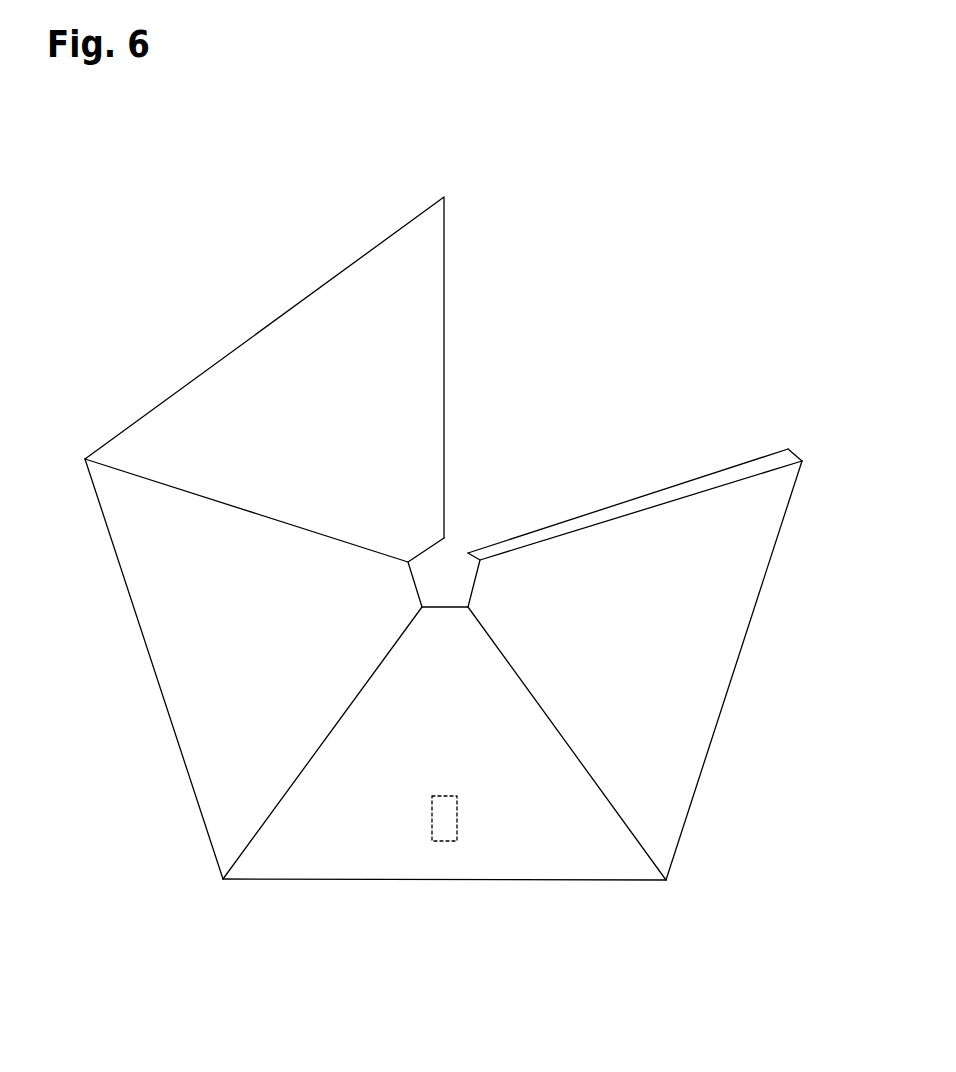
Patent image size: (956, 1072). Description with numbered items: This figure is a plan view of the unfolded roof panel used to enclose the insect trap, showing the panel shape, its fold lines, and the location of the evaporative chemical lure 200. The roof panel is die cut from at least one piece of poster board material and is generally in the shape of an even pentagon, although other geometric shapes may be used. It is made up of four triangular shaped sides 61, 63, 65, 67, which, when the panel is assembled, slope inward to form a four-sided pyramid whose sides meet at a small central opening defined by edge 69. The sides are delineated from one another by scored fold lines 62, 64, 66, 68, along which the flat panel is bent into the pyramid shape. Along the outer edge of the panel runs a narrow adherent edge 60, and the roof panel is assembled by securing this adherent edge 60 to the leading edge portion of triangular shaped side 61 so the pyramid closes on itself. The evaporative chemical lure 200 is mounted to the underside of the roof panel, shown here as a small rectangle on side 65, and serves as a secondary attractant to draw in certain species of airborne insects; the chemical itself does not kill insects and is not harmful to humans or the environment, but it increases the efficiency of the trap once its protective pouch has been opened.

The adherent edge 60 is at (637, 508).
The triangular shaped side 61 is at (320, 355).
The scored fold line 62 is at (175, 483).
The triangular shaped side 63 is at (202, 597).
The scored fold line 64 is at (258, 832).
The triangular shaped side 65 is at (523, 833).
The scored fold line 66 is at (622, 818).
The triangular shaped side 67 is at (652, 608).
The scored fold line 68 is at (750, 478).
The edge 69 is at (445, 607).
The evaporative chemical lure 200 is at (442, 818).